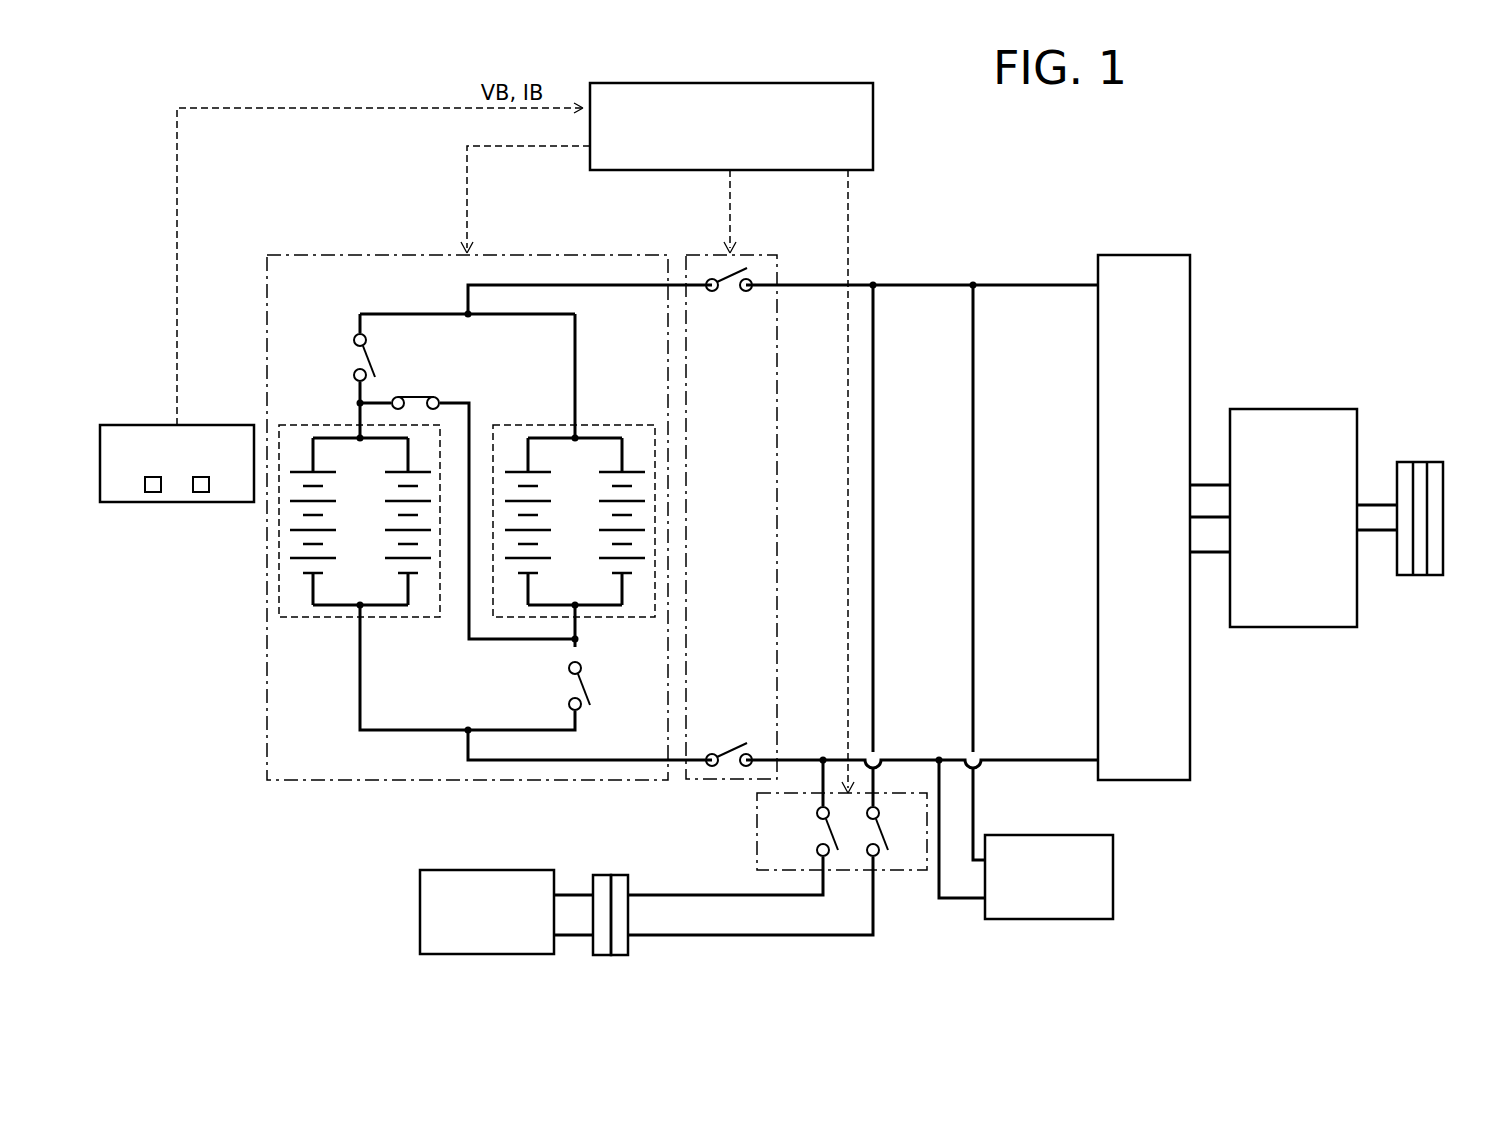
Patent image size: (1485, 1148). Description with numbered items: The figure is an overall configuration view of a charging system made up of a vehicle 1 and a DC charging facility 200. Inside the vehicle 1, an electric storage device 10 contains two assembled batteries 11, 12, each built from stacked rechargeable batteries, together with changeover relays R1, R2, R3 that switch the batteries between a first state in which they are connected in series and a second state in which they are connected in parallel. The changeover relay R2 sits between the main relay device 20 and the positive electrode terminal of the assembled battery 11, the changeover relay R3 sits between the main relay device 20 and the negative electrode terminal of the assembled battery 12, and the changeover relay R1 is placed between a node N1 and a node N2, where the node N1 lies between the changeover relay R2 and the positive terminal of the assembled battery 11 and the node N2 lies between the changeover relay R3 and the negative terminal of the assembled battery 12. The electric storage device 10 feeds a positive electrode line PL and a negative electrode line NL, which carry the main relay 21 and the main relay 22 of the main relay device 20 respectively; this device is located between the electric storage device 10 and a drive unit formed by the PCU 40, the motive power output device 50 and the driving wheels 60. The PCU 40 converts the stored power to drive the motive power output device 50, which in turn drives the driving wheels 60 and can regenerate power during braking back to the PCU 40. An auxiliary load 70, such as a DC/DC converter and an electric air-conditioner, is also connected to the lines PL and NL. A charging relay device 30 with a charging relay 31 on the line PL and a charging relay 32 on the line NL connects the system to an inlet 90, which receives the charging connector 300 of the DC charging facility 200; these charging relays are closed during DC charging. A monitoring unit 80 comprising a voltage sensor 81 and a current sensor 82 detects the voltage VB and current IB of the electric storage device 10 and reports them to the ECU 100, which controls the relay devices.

The vehicle 1 is at (1222, 140).
The electric storage device 10 is at (307, 255).
The assembled battery 11 is at (320, 425).
The assembled battery 12 is at (610, 425).
The main relay device 20 is at (758, 255).
The main relay 21 is at (728, 293).
The main relay 22 is at (730, 745).
The charging relay device 30 is at (757, 836).
The charging relay 31 is at (884, 820).
The charging relay 32 is at (817, 820).
The power control unit 40 is at (1152, 255).
The motive power output device 50 is at (1304, 409).
The driving wheels 60 is at (1422, 462).
The auxiliary load 70 is at (1113, 876).
The monitoring unit 80 is at (125, 425).
The voltage sensor 81 is at (155, 492).
The current sensor 82 is at (200, 492).
The inlet 90 is at (620, 875).
The electronic control unit 100 is at (826, 83).
The DC charging facility 200 is at (456, 870).
The charging connector 300 is at (602, 875).
The changeover relay R1 is at (415, 396).
The changeover relay R2 is at (357, 355).
The changeover relay R3 is at (572, 687).
The node N1 is at (338, 403).
The node N2 is at (598, 640).
The positive electrode line PL is at (804, 287).
The negative electrode line NL is at (803, 758).